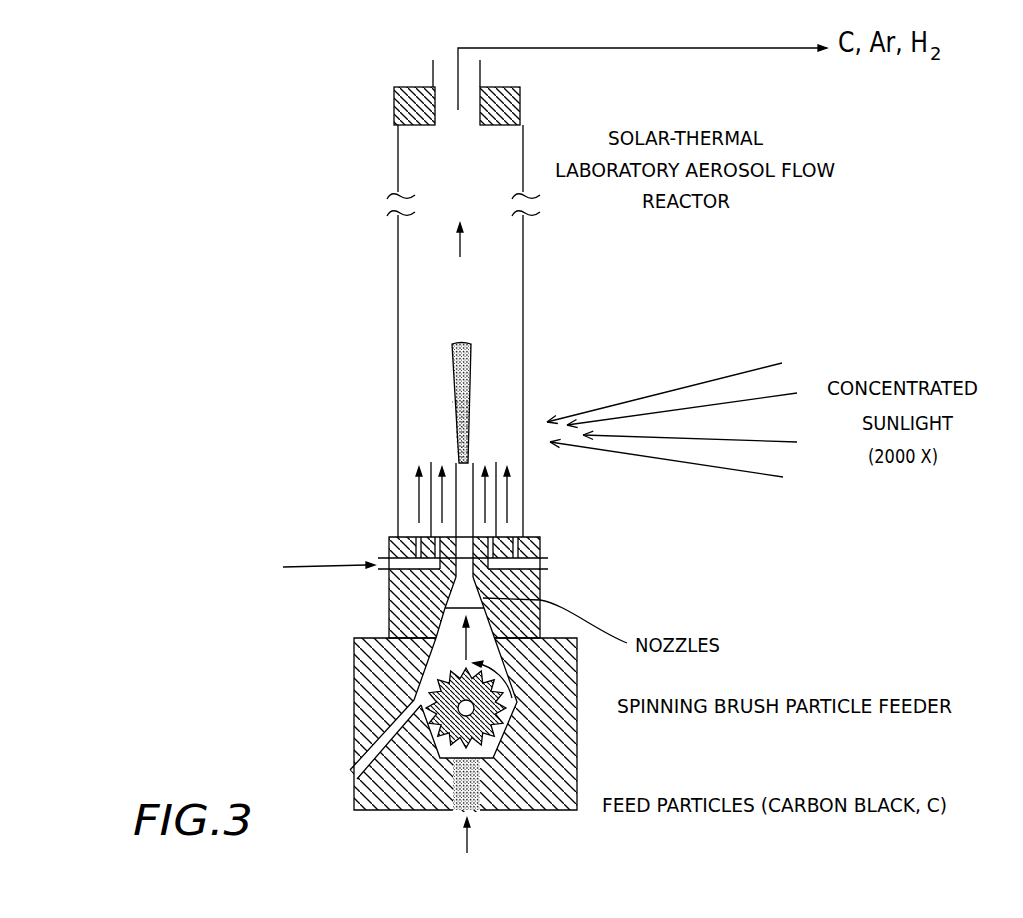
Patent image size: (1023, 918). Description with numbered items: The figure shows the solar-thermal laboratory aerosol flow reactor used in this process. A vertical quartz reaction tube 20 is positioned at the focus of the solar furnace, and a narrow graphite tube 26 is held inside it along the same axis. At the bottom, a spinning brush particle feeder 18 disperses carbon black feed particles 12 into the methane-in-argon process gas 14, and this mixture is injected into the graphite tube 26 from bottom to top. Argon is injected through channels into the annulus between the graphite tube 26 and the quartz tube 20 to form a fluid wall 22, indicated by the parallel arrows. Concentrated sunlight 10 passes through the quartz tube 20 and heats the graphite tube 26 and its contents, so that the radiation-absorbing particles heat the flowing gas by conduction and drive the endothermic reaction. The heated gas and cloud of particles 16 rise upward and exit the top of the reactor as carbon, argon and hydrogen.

The concentrated sunlight 10 is at (793, 463).
The carbon black particles 12 is at (470, 843).
The process gas 14 is at (350, 777).
The cloud of particles 16 is at (439, 370).
The spinning brush particle feeder 18 is at (505, 728).
The quartz reaction tube 20 is at (397, 287).
The fluid wall 22 is at (442, 520).
The graphite tube 26 is at (455, 494).